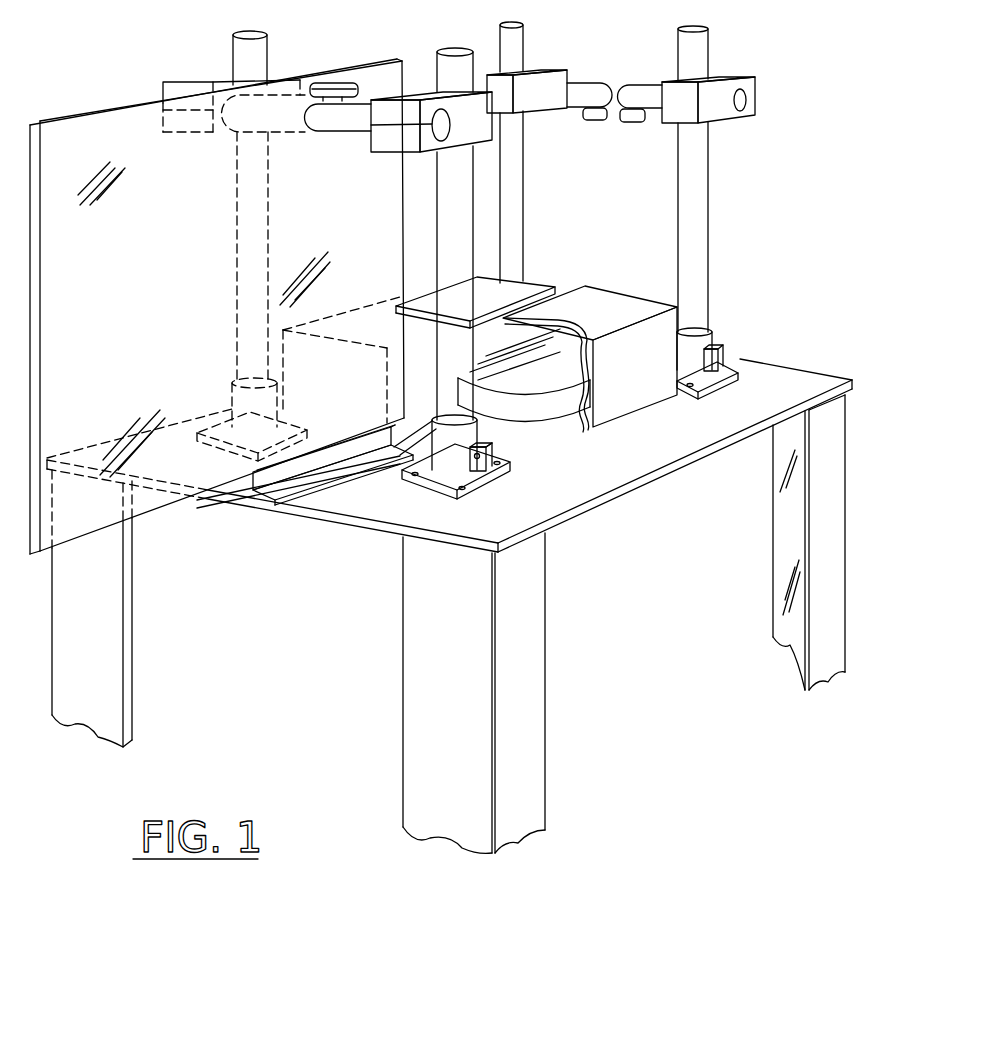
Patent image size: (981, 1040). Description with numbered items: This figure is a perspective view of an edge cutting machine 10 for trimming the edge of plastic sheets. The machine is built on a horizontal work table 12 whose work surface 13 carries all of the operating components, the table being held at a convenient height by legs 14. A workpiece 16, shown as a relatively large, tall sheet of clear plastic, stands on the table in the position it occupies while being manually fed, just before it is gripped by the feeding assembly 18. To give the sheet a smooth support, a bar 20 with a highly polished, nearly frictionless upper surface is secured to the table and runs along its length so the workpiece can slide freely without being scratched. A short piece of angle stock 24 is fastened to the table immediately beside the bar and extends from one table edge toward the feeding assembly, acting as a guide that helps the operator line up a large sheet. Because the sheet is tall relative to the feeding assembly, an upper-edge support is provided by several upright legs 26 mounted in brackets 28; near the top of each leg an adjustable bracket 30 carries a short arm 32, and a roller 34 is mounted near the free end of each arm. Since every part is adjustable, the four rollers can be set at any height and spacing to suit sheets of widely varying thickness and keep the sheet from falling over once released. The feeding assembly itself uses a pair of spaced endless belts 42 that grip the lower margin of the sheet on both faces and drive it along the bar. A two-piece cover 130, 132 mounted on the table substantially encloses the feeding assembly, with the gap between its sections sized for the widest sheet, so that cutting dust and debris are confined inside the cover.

The edge cutting machine 10 is at (293, 545).
The horizontal work table 12 is at (577, 518).
The work surface 13 is at (550, 485).
The legs 14 is at (433, 681).
The workpiece 16 is at (132, 303).
The feeding assembly 18 is at (548, 437).
The bar 20 is at (400, 420).
The angle stock 24 is at (337, 485).
The upright legs 26 is at (435, 240).
The brackets 28 is at (455, 467).
The bracket 30 is at (393, 153).
The short arm 32 is at (342, 134).
The roller 34 is at (348, 80).
The endless belts 42 is at (563, 385).
The cover section 130 is at (598, 296).
The cover section 132 is at (528, 290).